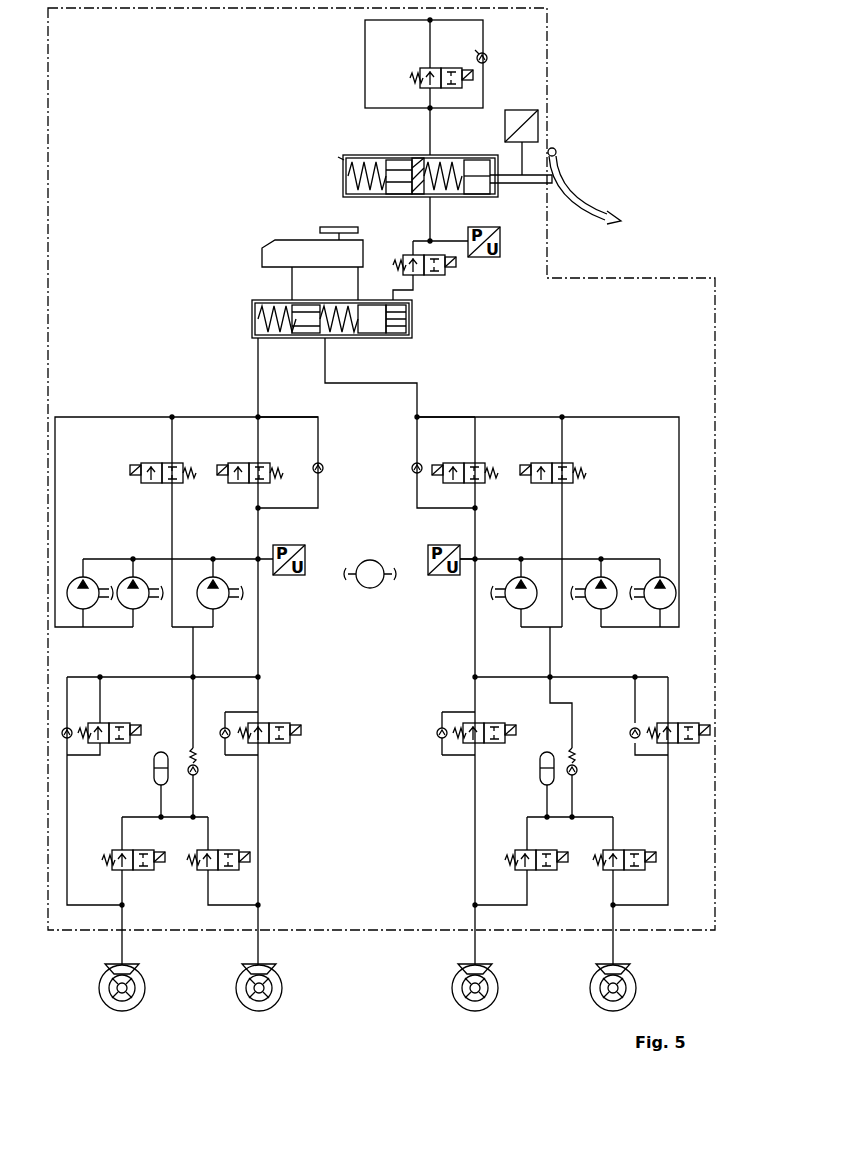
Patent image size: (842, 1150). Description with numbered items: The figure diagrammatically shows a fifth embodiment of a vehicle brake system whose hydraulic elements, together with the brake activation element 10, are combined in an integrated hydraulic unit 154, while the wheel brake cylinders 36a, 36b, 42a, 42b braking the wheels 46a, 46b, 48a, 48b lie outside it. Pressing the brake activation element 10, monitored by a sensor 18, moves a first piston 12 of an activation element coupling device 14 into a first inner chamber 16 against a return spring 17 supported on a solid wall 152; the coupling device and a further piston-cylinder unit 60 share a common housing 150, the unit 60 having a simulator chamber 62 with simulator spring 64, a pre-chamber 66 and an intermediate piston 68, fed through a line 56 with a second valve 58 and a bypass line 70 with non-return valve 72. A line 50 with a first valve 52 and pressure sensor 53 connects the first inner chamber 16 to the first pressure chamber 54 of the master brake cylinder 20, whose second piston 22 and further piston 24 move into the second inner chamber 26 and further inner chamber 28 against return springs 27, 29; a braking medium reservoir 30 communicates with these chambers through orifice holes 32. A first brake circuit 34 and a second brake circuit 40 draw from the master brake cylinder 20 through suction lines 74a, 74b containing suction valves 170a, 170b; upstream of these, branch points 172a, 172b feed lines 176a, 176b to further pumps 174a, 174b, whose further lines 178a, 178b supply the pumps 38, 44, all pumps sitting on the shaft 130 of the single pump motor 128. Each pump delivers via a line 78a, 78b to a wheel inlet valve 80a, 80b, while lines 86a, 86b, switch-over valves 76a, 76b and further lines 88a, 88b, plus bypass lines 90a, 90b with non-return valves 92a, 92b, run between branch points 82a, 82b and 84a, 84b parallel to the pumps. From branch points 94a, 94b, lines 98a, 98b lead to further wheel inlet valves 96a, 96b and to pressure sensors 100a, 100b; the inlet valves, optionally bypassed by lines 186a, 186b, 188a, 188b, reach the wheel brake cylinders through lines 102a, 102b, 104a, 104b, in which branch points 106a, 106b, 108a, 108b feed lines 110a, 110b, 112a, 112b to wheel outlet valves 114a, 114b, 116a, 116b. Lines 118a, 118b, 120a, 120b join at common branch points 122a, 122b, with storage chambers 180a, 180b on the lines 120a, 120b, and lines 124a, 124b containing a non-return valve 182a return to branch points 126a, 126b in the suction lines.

The brake activation element 10 is at (566, 186).
The first piston 12 is at (479, 162).
The activation element coupling device 14 is at (480, 203).
The first inner chamber 16 is at (445, 158).
The return spring 17 is at (456, 198).
The sensor 18 is at (538, 118).
The master brake cylinder 20 is at (244, 316).
The second piston 22 is at (396, 338).
The further piston 24 is at (308, 338).
The second inner chamber 26 is at (370, 338).
The return spring 27 is at (342, 338).
The further inner chamber 28 is at (256, 340).
The return spring 29 is at (284, 338).
The braking medium reservoir 30 is at (264, 255).
The orifice hole 32 is at (292, 284).
The first brake circuit 34 is at (456, 860).
The first wheel brake cylinder 36a is at (596, 982).
The second wheel brake cylinder 36b is at (240, 982).
The first pump 38 is at (524, 575).
The second brake circuit 40 is at (275, 860).
The first wheel brake cylinder 42a is at (458, 972).
The second wheel brake cylinder 42b is at (108, 972).
The second pump 44 is at (210, 575).
The wheel 46a is at (596, 994).
The wheel 46b is at (242, 994).
The wheel 48a is at (458, 994).
The wheel 48b is at (106, 994).
The line 50 is at (412, 256).
The first valve 52 is at (424, 275).
The pressure sensor 53 is at (482, 257).
The first pressure chamber 54 is at (410, 338).
The line 56 is at (365, 70).
The second valve 58 is at (425, 68).
The further piston-cylinder unit 60 is at (333, 186).
The simulator chamber 62 is at (362, 159).
The simulator spring 64 is at (343, 165).
The pre-chamber 66 is at (396, 198).
The intermediate piston 68 is at (398, 158).
The bypass line 70 is at (483, 20).
The non-return valve 72 is at (487, 56).
The suction line 74a is at (518, 414).
The suction line 74b is at (230, 414).
The switch-over valve 76a is at (483, 463).
The switch-over valve 76b is at (245, 463).
The line 78a is at (475, 652).
The line 78b is at (258, 652).
The wheel inlet valve 80a is at (480, 731).
The wheel inlet valve 80b is at (274, 743).
The branch point 82a is at (470, 416).
The branch point 82b is at (258, 416).
The branch point 84a is at (473, 508).
The branch point 84b is at (260, 508).
The line 86a is at (474, 452).
The line 86b is at (260, 452).
The further line 88a is at (476, 496).
The further line 88b is at (256, 496).
The bypass line 90a is at (417, 427).
The bypass line 90b is at (318, 427).
The non-return valve 92a is at (414, 463).
The non-return valve 92b is at (321, 463).
The branch point 94a is at (475, 677).
The branch point 94b is at (258, 677).
The further wheel inlet valve 96a is at (686, 723).
The further wheel inlet valve 96b is at (116, 723).
The line 98a is at (584, 677).
The line 98b is at (154, 677).
The pressure sensor 100a is at (446, 575).
The pressure sensor 100b is at (292, 575).
The line 102a is at (475, 957).
The line 102b is at (258, 957).
The line 104a is at (613, 957).
The line 104b is at (122, 957).
The branch point 106a is at (475, 905).
The branch point 106b is at (258, 905).
The branch point 108a is at (613, 905).
The branch point 108b is at (122, 905).
The line 110a is at (495, 882).
The line 110b is at (238, 882).
The line 112a is at (613, 894).
The line 112b is at (122, 894).
The wheel outlet valve 114a is at (520, 854).
The wheel outlet valve 114b is at (226, 846).
The wheel outlet valve 116a is at (632, 846).
The wheel outlet valve 116b is at (116, 854).
The line 118a is at (530, 814).
The line 118b is at (190, 834).
The line 120a is at (588, 817).
The line 120b is at (144, 817).
The branch point 122a is at (574, 817).
The branch point 122b is at (196, 817).
The line 124a is at (550, 698).
The line 124b is at (193, 698).
The branch point 126a is at (534, 628).
The branch point 126b is at (190, 628).
The pump motor 128 is at (364, 585).
The shaft 130 is at (394, 585).
The common housing 150 is at (342, 154).
The solid wall 152 is at (422, 196).
The hydraulic unit 154 is at (688, 278).
The suction valve 170a is at (575, 463).
The suction valve 170b is at (162, 463).
The branch point 172a is at (562, 414).
The branch point 172b is at (172, 414).
The further pump 174a is at (658, 575).
The further pump 174b is at (124, 575).
The line 176a is at (626, 414).
The line 176b is at (103, 416).
The further line 178a is at (582, 558).
The further line 178b is at (153, 558).
The storage chamber 180a is at (542, 776).
The storage chamber 180b is at (154, 776).
The non-return valve 182a is at (188, 758).
The bypass line 186a is at (448, 762).
The bypass line 186b is at (238, 770).
The bypass line 188a is at (630, 752).
The bypass line 188b is at (74, 677).